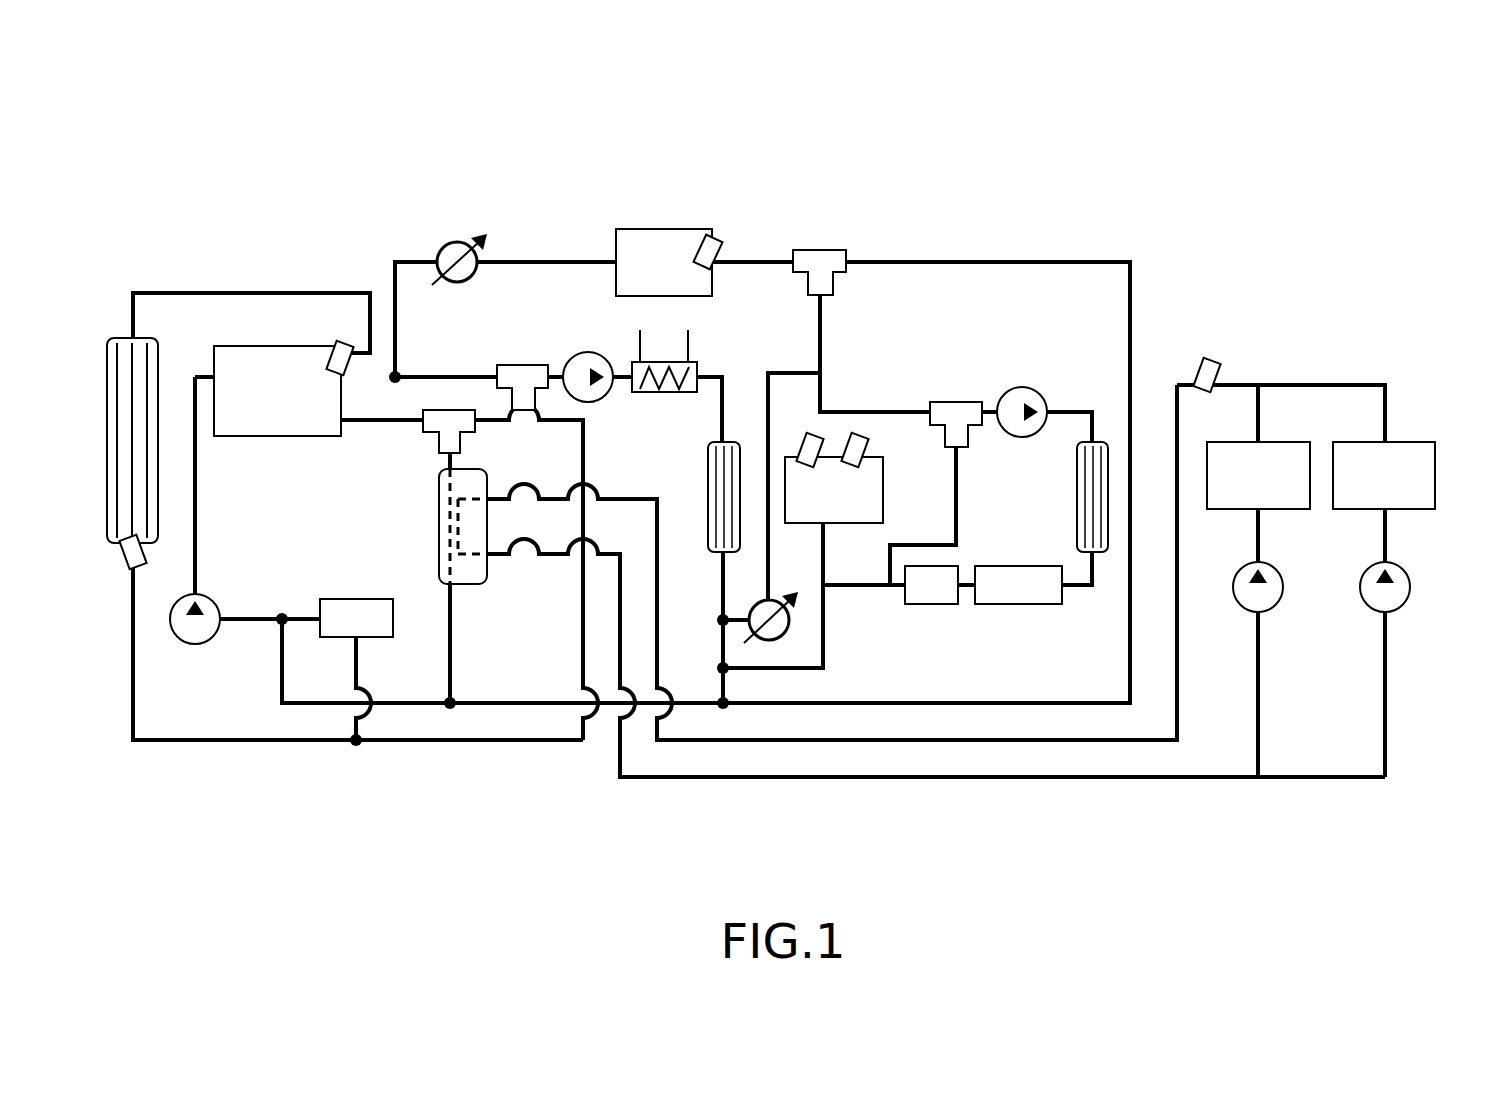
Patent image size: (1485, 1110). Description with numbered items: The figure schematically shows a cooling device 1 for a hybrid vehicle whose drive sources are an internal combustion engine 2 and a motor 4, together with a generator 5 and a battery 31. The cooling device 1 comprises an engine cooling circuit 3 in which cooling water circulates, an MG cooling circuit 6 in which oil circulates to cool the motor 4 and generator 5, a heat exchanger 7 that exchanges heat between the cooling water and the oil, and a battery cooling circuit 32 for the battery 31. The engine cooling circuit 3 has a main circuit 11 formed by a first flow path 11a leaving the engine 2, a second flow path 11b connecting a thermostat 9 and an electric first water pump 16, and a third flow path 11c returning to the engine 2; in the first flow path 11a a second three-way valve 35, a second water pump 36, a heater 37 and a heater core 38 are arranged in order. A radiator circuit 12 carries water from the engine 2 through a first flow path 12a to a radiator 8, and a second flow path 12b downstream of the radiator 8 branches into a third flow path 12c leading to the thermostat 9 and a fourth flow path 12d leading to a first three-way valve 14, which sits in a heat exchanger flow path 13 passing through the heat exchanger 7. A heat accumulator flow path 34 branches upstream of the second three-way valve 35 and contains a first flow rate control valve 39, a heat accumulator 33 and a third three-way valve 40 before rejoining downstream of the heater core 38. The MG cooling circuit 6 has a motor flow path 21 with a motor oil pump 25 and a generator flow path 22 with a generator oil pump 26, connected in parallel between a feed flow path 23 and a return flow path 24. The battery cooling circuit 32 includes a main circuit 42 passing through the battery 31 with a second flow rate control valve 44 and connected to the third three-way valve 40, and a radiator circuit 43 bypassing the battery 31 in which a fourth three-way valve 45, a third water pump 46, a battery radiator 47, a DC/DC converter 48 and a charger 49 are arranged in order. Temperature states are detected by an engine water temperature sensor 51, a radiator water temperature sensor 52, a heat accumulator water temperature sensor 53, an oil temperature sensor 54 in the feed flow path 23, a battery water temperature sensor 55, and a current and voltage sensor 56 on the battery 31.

The cooling device 1 is at (810, 142).
The internal combustion engine 2 is at (234, 346).
The engine cooling circuit 3 is at (538, 244).
The motor 4 is at (1292, 442).
The generator 5 is at (1414, 442).
The MG cooling circuit 6 is at (1292, 357).
The heat exchanger 7 is at (439, 515).
The radiator 8 is at (114, 338).
The thermostat 9 is at (350, 596).
The main circuit 11 is at (710, 369).
The first flow path 11a is at (724, 612).
The second flow path 11b is at (246, 600).
The third flow path 11c is at (200, 484).
The radiator circuit 12 is at (309, 274).
The first flow path 12a is at (210, 293).
The second flow path 12b is at (205, 740).
The third flow path 12c is at (356, 662).
The fourth flow path 12d is at (586, 461).
The heat exchanger flow path 13 is at (376, 425).
The first three-way valve 14 is at (448, 410).
The first water pump 16 is at (192, 644).
The motor flow path 21 is at (1264, 682).
The generator flow path 22 is at (1390, 682).
The feed flow path 23 is at (856, 740).
The return flow path 24 is at (745, 782).
The motor oil pump 25 is at (1284, 589).
The generator oil pump 26 is at (1412, 589).
The battery 31 is at (883, 489).
The battery cooling circuit 32 is at (872, 386).
The heat accumulator 33 is at (678, 228).
The heat accumulator flow path 34 is at (999, 260).
The second three-way valve 35 is at (516, 364).
The second water pump 36 is at (584, 352).
The heater 37 is at (658, 390).
The heater core 38 is at (704, 484).
The first flow rate control valve 39 is at (460, 242).
The third three-way valve 40 is at (822, 250).
The main circuit 42 is at (790, 374).
The radiator circuit 43 is at (1078, 402).
The second flow rate control valve 44 is at (786, 636).
The fourth three-way valve 45 is at (958, 402).
The third water pump 46 is at (1014, 438).
The battery radiator 47 is at (1102, 556).
The DC/DC converter 48 is at (1018, 608).
The charger 49 is at (934, 608).
The engine water temperature sensor 51 is at (328, 348).
The radiator water temperature sensor 52 is at (132, 560).
The heat accumulator water temperature sensor 53 is at (718, 252).
The oil temperature sensor 54 is at (1200, 358).
The battery water temperature sensor 55 is at (806, 435).
The current and voltage sensor 56 is at (866, 448).